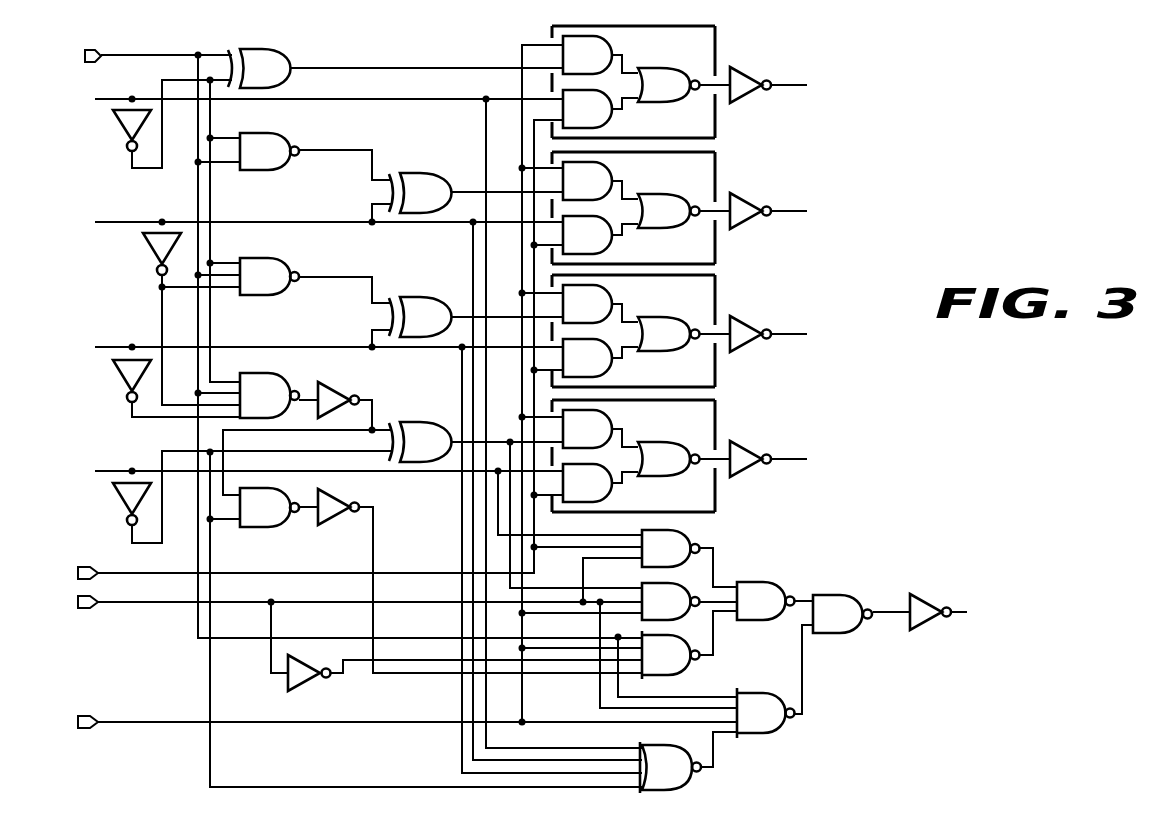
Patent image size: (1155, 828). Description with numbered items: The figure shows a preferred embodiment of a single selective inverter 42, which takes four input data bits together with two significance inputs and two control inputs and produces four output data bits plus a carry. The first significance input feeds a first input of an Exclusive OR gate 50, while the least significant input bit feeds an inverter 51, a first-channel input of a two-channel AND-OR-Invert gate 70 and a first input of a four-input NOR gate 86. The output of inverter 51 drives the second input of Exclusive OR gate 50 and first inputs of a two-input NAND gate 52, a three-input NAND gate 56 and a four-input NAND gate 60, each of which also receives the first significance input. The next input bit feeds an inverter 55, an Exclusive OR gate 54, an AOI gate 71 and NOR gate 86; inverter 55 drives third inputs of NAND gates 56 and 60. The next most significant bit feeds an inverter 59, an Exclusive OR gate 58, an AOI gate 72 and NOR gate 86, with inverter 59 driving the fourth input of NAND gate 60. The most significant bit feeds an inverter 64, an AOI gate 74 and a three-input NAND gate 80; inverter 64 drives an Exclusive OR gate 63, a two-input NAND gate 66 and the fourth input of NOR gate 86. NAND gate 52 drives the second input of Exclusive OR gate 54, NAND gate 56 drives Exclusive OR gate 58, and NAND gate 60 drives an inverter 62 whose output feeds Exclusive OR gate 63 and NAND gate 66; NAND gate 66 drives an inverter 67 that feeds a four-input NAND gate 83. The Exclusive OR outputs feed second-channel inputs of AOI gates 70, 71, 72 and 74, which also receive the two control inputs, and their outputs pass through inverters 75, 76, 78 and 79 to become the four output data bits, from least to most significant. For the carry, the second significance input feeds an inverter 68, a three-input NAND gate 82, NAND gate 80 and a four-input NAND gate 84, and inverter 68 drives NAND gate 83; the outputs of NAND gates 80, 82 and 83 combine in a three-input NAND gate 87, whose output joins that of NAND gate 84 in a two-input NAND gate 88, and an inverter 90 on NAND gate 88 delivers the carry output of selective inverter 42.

The selective inverter 42 is at (1010, 355).
The Exclusive OR gate 50 is at (279, 50).
The inverter 51 is at (118, 122).
The 2-input NAND gate 52 is at (279, 133).
The Exclusive OR gate 54 is at (418, 172).
The inverter 55 is at (150, 250).
The 3-input NAND gate 56 is at (279, 258).
The Exclusive OR gate 58 is at (418, 297).
The inverter 59 is at (121, 367).
The 4-input NAND gate 60 is at (279, 380).
The inverter 62 is at (338, 394).
The Exclusive OR gate 63 is at (418, 422).
The inverter 64 is at (121, 490).
The 2-input NAND gate 66 is at (270, 529).
The inverter 67 is at (345, 526).
The inverter 68 is at (315, 685).
The AND-OR-Invert gate 70 is at (677, 58).
The AND-OR-Invert gate 71 is at (677, 184).
The AND-OR-Invert gate 72 is at (677, 307).
The AND-OR-Invert gate 74 is at (677, 432).
The inverter 75 is at (748, 68).
The inverter 76 is at (748, 194).
The inverter 78 is at (748, 317).
The inverter 79 is at (748, 442).
The 3-input NAND gate 80 is at (651, 559).
The 3-input NAND gate 82 is at (651, 613).
The 4-input NAND gate 83 is at (651, 666).
The 4-input NAND gate 84 is at (746, 724).
The 4-input NOR gate 86 is at (653, 778).
The 3-input NAND gate 87 is at (746, 612).
The 2-input NAND gate 88 is at (824, 624).
The inverter 90 is at (945, 628).